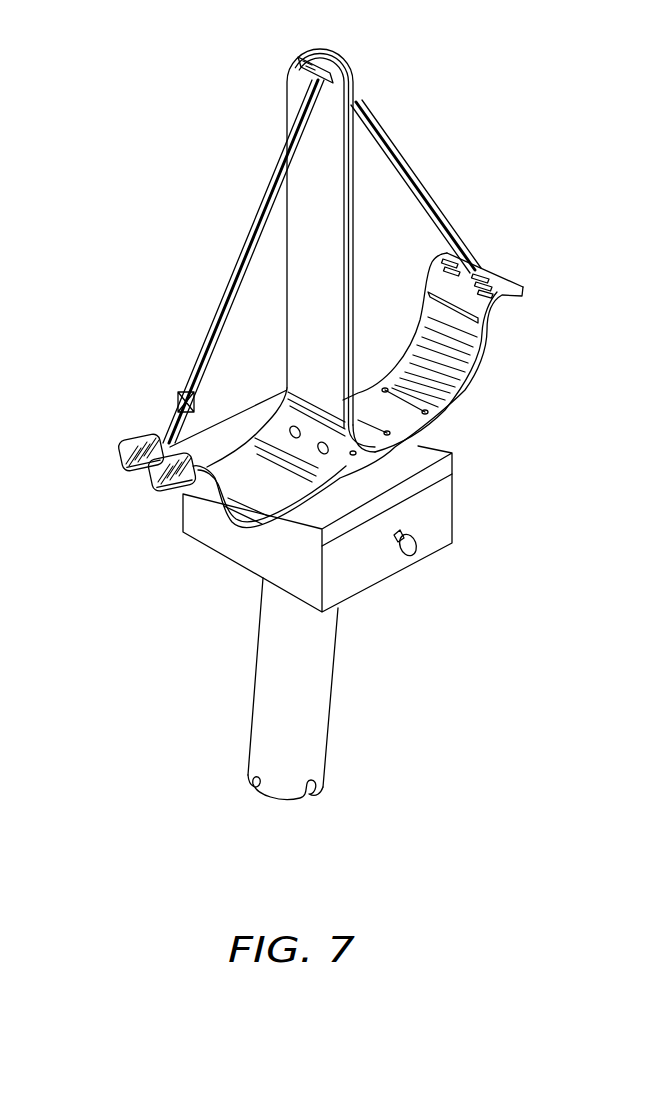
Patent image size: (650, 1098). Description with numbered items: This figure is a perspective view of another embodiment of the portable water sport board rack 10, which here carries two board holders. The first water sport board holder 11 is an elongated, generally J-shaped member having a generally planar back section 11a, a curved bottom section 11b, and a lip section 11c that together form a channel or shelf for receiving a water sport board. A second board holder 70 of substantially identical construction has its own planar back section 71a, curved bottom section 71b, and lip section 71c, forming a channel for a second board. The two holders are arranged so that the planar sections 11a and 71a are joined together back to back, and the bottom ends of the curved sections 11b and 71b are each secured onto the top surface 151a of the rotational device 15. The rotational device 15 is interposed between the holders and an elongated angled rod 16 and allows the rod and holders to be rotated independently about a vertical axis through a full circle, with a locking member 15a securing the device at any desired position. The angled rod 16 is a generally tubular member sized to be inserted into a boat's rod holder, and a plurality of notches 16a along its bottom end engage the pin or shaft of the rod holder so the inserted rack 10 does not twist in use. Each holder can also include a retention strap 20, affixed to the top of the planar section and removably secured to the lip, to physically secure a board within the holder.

The rack 10 is at (190, 80).
The water sport board holder 11 is at (172, 218).
The planar back section 11a is at (340, 276).
The curved bottom section 11b is at (284, 493).
The lip section 11c is at (118, 466).
The rotational device 15 is at (370, 580).
The locking member 15a is at (413, 543).
The top surface 151a is at (425, 457).
The angled rod 16 is at (308, 728).
The notches 16a is at (322, 792).
The retention strap 20 is at (237, 268).
The second board holder 70 is at (445, 125).
The planar back section 71a is at (352, 82).
The curved bottom section 71b is at (375, 410).
The lip section 71c is at (527, 290).